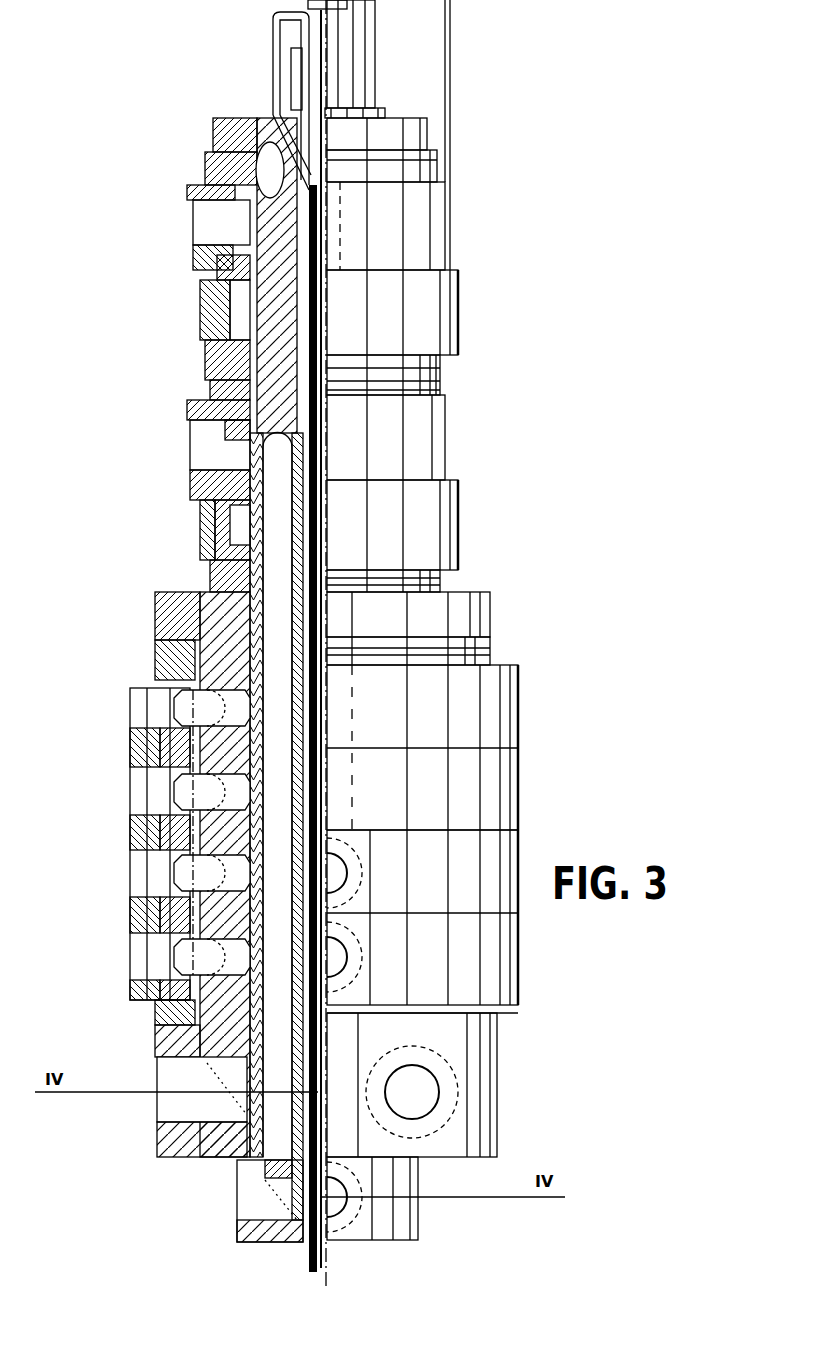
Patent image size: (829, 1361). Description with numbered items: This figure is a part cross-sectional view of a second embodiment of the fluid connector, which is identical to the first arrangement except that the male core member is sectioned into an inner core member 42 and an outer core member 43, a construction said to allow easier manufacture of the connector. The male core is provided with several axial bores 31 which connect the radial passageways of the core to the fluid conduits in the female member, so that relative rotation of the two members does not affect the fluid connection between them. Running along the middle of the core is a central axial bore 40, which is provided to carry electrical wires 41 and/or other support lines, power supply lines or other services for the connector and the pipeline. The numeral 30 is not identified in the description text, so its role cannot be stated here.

The drive unit body 30 is at (428, 1096).
The axial bores 31 is at (233, 714).
The central axial bore 40 is at (328, 1238).
The electrical wires 41 is at (313, 1257).
The inner core member 42 is at (262, 152).
The outer core member 43 is at (244, 849).